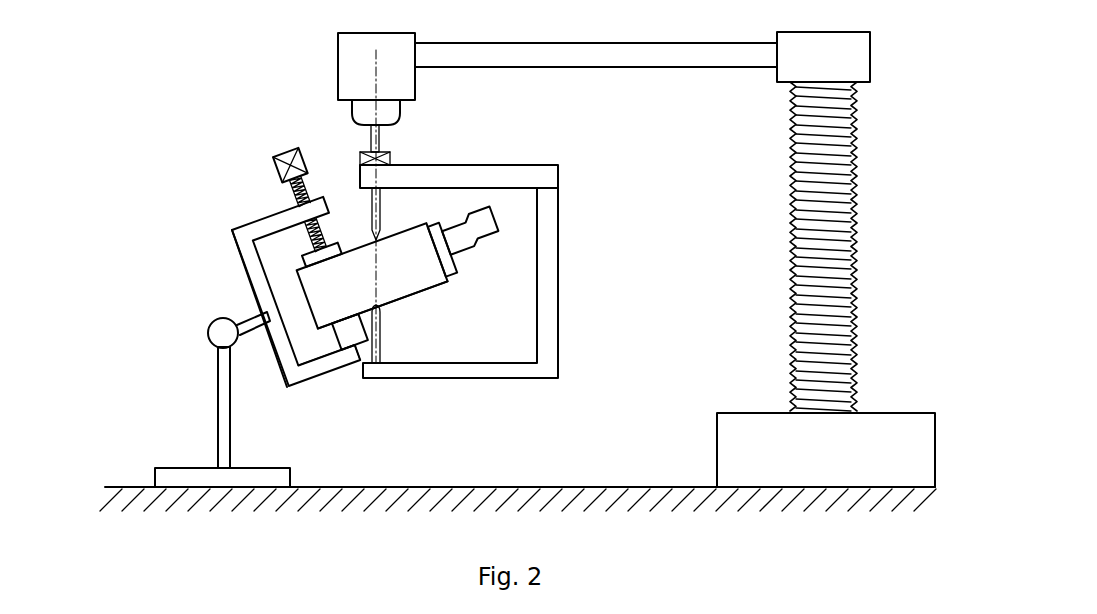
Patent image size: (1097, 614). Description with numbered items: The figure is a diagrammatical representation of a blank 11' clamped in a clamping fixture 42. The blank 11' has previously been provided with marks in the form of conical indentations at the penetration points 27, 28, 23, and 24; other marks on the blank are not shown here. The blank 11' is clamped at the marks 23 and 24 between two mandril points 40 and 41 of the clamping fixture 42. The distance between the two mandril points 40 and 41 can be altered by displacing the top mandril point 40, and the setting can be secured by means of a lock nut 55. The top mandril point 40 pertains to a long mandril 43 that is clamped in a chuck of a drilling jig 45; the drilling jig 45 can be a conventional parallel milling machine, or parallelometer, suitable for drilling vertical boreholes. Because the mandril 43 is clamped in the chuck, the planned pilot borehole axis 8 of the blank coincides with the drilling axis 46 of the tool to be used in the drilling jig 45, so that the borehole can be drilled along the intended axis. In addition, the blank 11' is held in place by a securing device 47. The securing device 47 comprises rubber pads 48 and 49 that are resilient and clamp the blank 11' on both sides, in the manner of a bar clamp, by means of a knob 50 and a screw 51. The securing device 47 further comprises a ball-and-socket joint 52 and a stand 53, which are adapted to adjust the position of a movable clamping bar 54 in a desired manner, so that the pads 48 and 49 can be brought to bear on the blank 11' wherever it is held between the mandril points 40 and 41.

The planned pilot borehole axis 8 is at (463, 225).
The blank 11' is at (662, 246).
The penetration point 23 is at (426, 220).
The penetration point 24 is at (392, 284).
The penetration point 27 is at (286, 387).
The penetration point 28 is at (432, 288).
The top mandril point 40 is at (212, 134).
The mandril point 41 is at (378, 330).
The clamping fixture 42 is at (530, 190).
The mandril 43 is at (360, 153).
The drilling jig 45 is at (708, 58).
The drilling axis 46 is at (375, 77).
The securing device 47 is at (335, 340).
The rubber pad 48 is at (231, 286).
The rubber pad 49 is at (318, 352).
The knob 50 is at (273, 157).
The screw 51 is at (287, 196).
The ball-and-socket joint 52 is at (208, 333).
The stand 53 is at (216, 420).
The movable clamping bar 54 is at (233, 232).
The lock nut 55 is at (358, 194).